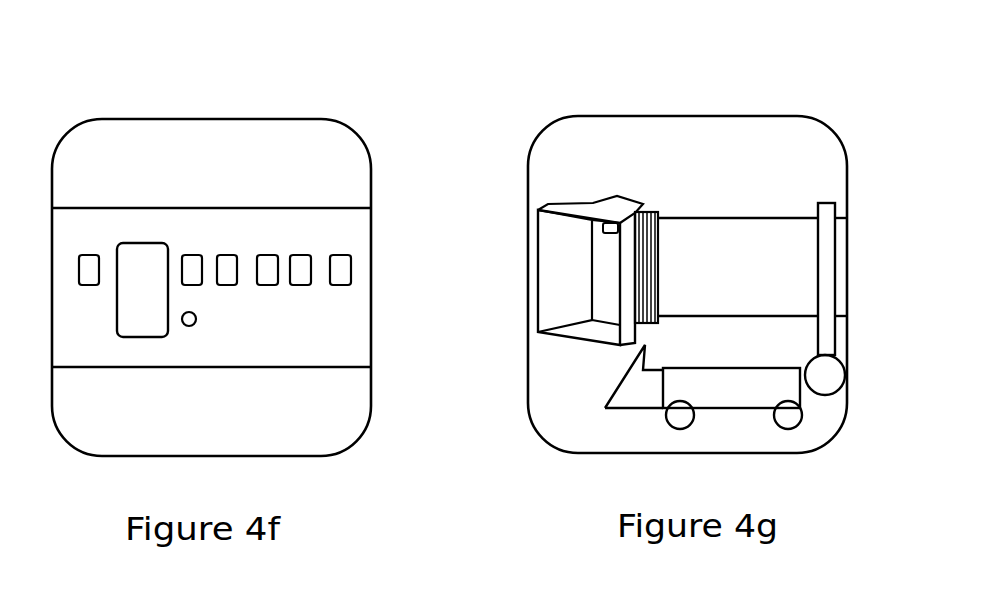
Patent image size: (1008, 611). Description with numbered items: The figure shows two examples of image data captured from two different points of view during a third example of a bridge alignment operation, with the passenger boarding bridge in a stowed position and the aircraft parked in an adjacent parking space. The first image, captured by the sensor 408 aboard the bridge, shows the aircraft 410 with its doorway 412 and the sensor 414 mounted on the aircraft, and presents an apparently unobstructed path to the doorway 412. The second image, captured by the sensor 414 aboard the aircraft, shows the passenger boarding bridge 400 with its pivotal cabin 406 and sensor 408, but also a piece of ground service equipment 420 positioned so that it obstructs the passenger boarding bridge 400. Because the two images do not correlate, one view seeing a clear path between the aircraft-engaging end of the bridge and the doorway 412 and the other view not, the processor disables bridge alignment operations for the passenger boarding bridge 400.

In FIG. 4G, the passenger boarding bridge 400 is at (749, 182).
In FIG. 4G, the pivotal cabin 406 is at (587, 200).
In FIG. 4G, the sensor 408 is at (607, 233).
In FIG. 4F, the aircraft 410 is at (336, 180).
In FIG. 4F, the doorway 412 is at (150, 242).
In FIG. 4F, the sensor 414 is at (196, 322).
In FIG. 4G, the piece of ground service equipment 420 is at (740, 412).